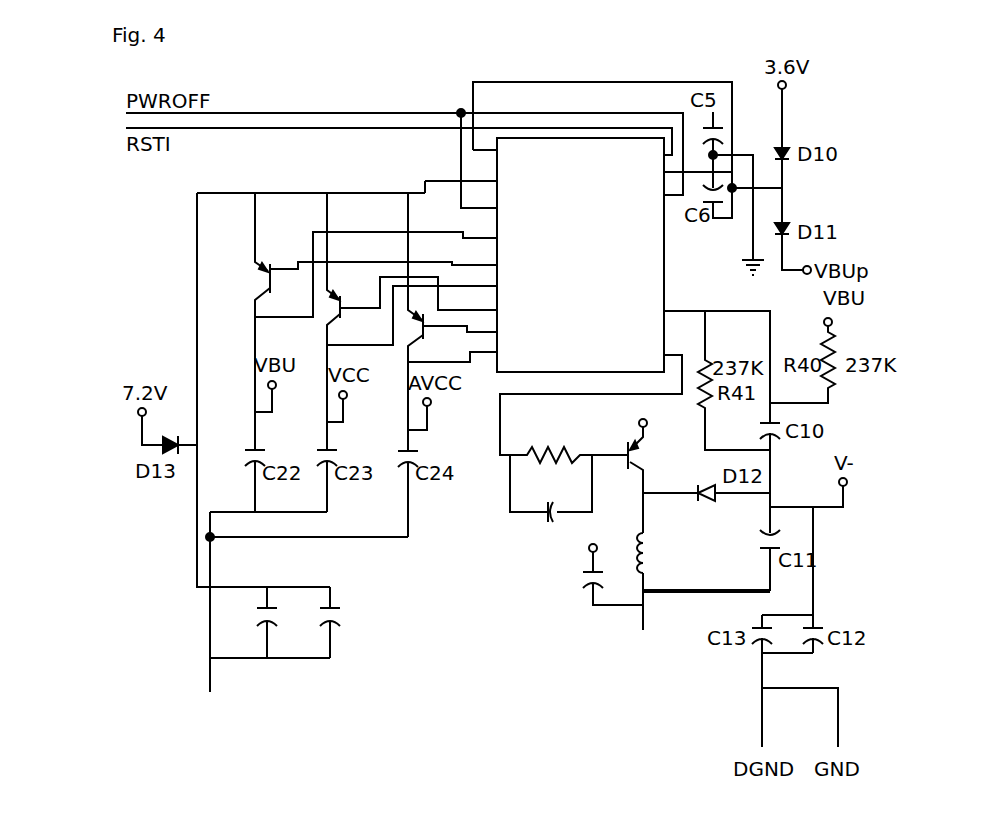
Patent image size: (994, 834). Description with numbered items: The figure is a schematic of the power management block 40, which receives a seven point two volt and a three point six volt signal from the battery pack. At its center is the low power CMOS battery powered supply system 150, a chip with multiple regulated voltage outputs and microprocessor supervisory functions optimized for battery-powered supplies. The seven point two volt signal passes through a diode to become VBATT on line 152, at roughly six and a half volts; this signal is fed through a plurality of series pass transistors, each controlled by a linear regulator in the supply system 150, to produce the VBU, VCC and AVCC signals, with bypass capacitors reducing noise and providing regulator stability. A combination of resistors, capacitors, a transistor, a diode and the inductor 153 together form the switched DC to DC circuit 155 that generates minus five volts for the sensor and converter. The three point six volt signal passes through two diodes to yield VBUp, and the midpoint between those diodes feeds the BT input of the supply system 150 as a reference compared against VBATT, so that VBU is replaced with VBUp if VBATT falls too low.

The power management block 40 is at (156, 617).
The battery powered supply system 150 is at (606, 229).
The VBATT line 152 is at (360, 192).
The inductor 153 is at (652, 560).
The switched DC to DC circuit 155 is at (565, 641).